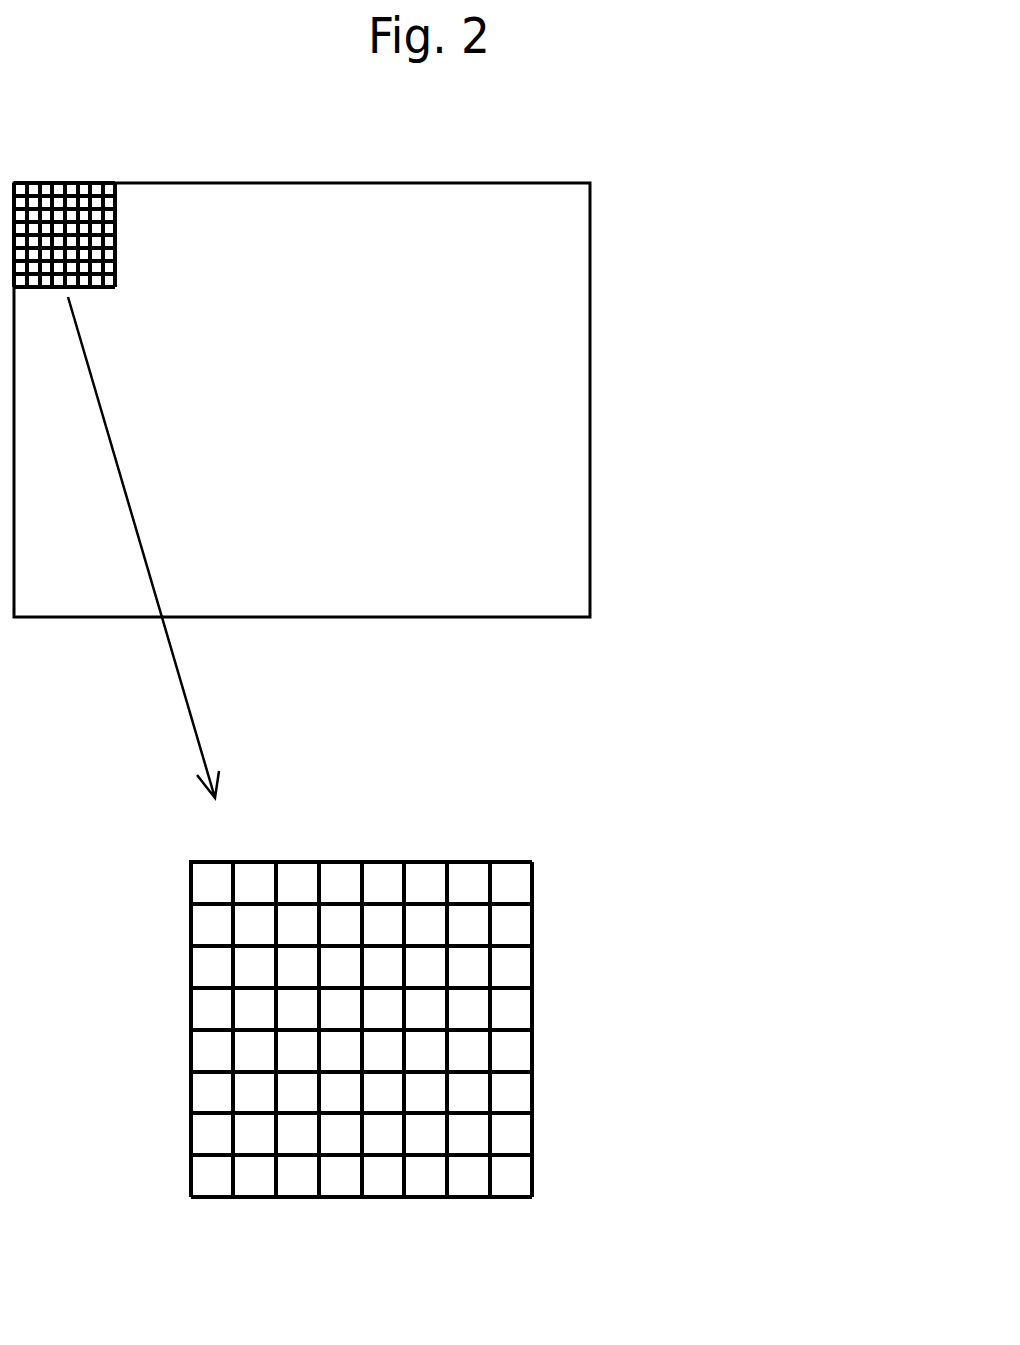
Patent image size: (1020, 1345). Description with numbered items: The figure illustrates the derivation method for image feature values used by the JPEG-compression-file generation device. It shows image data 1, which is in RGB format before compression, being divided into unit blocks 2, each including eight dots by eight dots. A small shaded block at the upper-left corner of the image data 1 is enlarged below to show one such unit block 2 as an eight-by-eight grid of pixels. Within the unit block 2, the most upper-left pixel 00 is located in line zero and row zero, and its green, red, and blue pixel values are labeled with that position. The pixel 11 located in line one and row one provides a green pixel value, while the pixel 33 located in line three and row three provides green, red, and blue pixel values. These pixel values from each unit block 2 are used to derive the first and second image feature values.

The image data 1 is at (592, 399).
The unit block 2 is at (553, 995).
The pixel located in line 0 and row 0 00 is at (213, 882).
The pixel located in line 1 and row 1 11 is at (255, 924).
The pixel located in line 3 and row 3 33 is at (340, 1008).